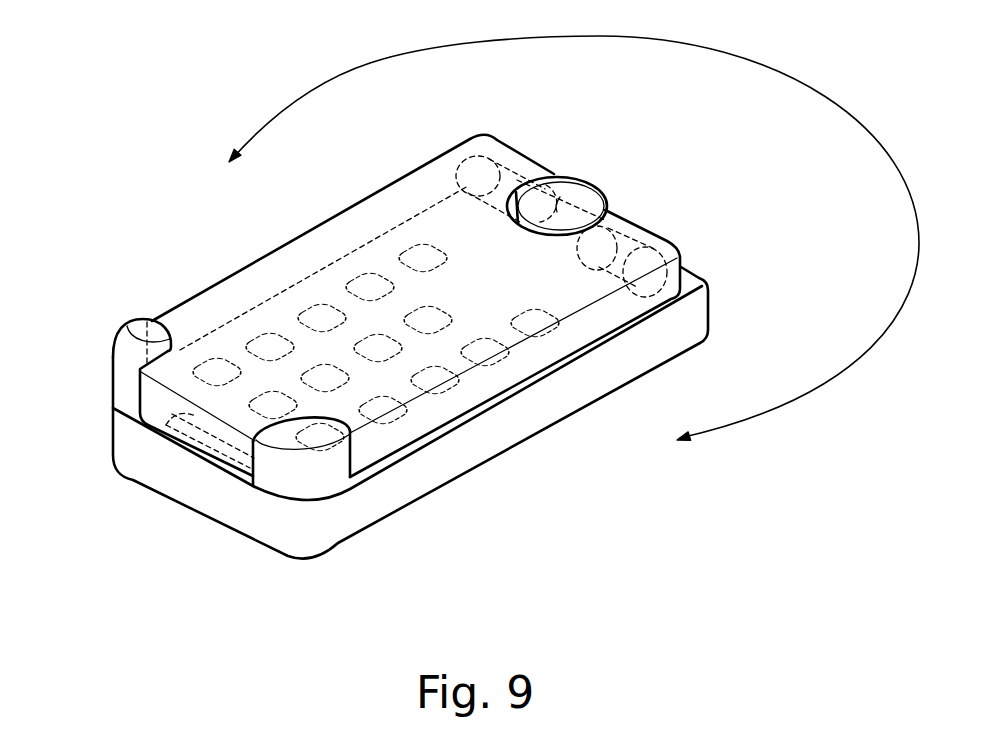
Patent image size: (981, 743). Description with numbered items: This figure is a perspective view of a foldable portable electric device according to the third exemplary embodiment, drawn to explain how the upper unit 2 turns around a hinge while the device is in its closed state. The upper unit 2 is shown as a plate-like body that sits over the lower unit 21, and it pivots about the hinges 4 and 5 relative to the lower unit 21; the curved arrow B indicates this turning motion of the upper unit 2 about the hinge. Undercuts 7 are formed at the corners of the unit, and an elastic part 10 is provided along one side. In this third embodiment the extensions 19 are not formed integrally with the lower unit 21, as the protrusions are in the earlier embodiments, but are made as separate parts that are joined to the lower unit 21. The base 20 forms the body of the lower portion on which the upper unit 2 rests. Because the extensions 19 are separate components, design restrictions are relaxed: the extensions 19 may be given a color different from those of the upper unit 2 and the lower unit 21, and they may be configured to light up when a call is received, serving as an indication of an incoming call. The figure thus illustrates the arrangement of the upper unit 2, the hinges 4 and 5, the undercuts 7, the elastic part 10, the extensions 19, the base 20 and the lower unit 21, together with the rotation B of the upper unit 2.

The upper unit 2 is at (273, 250).
The hinge 4 is at (512, 178).
The hinge 5 is at (590, 190).
The undercut 7 is at (127, 326).
The elastic part 10 is at (160, 425).
The extension 19 is at (125, 385).
The base 20 is at (546, 452).
The lower unit 21 is at (392, 488).
The rotation direction B is at (827, 101).